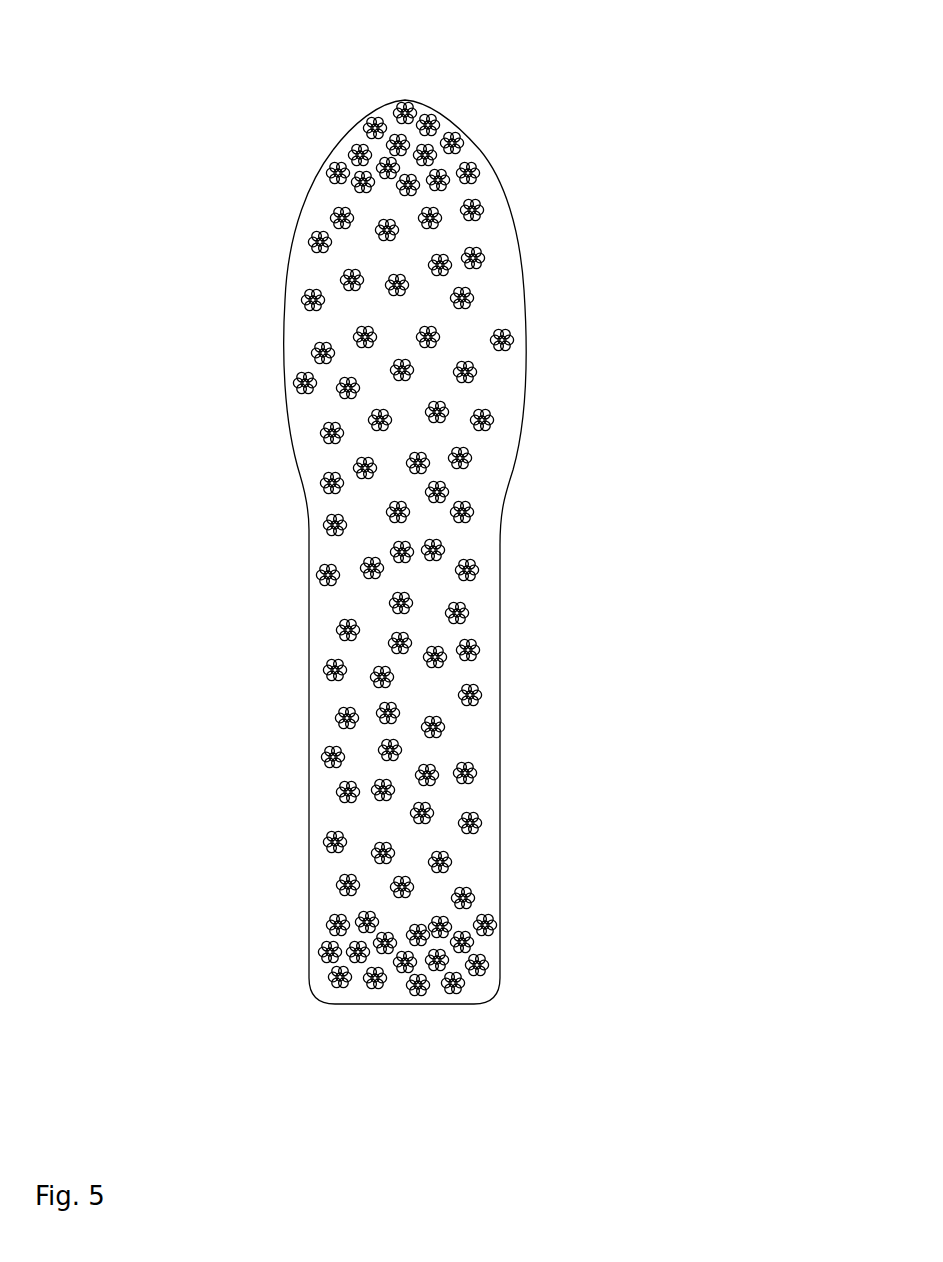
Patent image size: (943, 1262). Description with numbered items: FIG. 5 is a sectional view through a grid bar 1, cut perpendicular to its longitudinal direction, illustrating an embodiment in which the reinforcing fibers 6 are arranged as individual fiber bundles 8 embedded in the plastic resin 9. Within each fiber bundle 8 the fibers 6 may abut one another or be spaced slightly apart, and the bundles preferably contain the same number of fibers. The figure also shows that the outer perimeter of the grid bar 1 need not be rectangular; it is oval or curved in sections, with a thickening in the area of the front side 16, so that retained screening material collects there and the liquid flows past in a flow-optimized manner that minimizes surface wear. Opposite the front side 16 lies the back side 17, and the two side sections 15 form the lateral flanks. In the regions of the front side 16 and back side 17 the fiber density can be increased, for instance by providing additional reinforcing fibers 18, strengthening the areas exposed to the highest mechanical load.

The grid bar 1 is at (212, 142).
The fibers 6 is at (508, 338).
The fiber bundles 8 is at (480, 455).
The plastic resin 9 is at (475, 538).
The side sections 15 is at (308, 580).
The front side 16 is at (407, 100).
The back side 17 is at (397, 1003).
The reinforcing fibers 18 is at (500, 144).